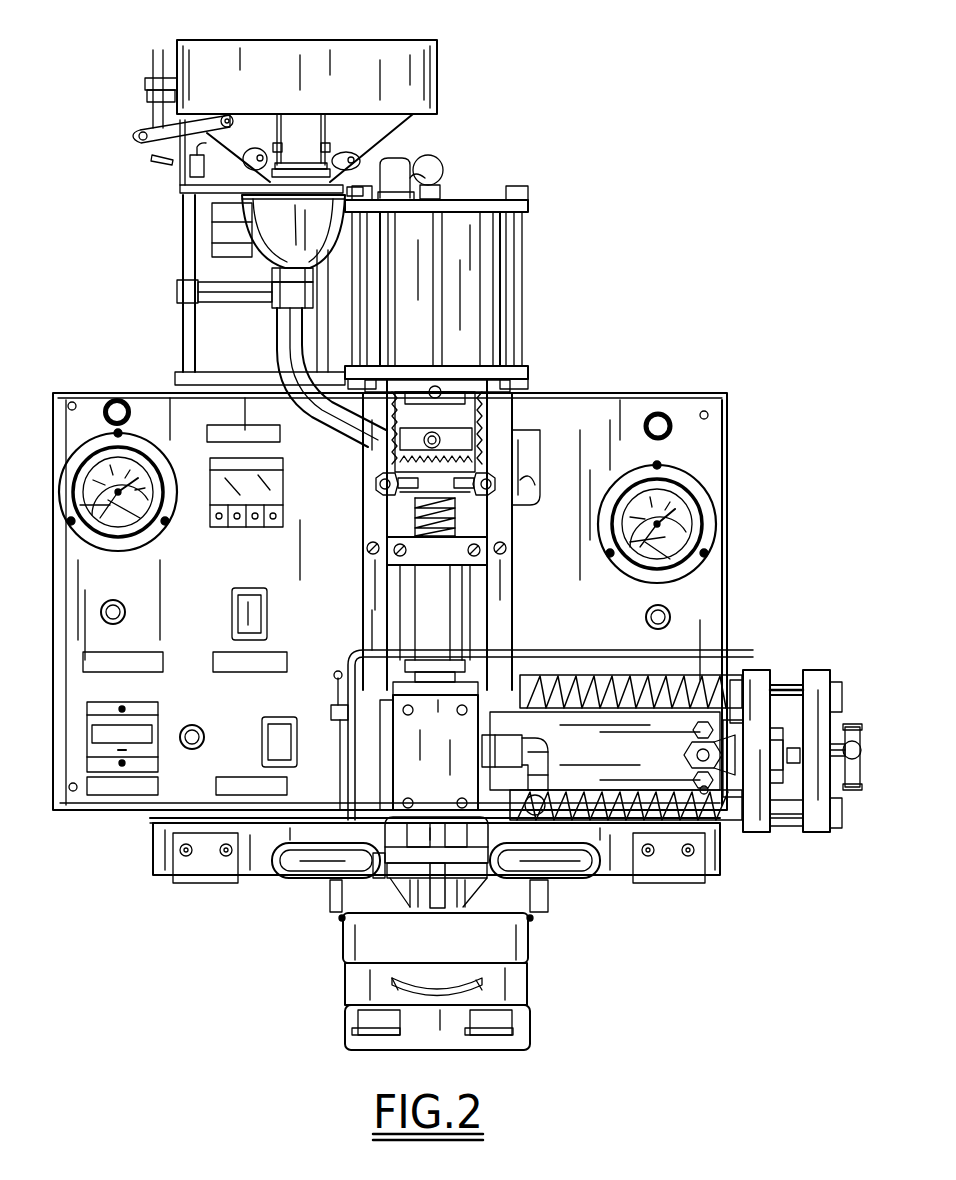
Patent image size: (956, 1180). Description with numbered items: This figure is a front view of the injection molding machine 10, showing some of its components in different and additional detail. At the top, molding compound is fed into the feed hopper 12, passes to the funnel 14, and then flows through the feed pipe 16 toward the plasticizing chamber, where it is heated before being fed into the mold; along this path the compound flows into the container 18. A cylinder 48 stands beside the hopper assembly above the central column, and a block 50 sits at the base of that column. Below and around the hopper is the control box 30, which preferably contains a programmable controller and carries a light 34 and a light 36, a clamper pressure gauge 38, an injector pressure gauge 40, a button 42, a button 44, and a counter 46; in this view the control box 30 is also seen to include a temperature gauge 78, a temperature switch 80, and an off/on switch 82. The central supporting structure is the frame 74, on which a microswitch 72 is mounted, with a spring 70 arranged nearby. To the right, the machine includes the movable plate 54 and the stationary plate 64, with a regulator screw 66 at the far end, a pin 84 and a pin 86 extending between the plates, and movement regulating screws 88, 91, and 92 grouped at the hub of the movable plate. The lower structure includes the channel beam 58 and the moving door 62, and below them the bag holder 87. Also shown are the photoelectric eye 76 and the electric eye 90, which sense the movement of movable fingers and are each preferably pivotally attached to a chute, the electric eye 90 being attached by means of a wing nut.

The injection molding machine 10 is at (614, 102).
The feed hopper 12 is at (436, 92).
The funnel 14 is at (280, 248).
The feed pipe 16 is at (290, 342).
The container 18 is at (487, 470).
The control box 30 is at (634, 393).
The light 34 is at (671, 432).
The light 36 is at (117, 398).
The clamper pressure gauge 38 is at (690, 502).
The injector pressure gauge 40 is at (140, 520).
The button 42 is at (648, 612).
The button 44 is at (126, 612).
The counter 46 is at (152, 729).
The pneumatic cylinder 48 is at (502, 288).
The pump block 50 is at (451, 778).
The movable plate 54 is at (593, 781).
The channel beam 58 is at (439, 942).
The moving door 62 is at (437, 910).
The stationary plate 64 is at (825, 672).
The regulator screw 66 is at (853, 725).
The spring 70 is at (700, 690).
The microswitch 72 is at (542, 440).
The frame 74 is at (372, 512).
The photoelectric eye 76 is at (522, 897).
The temperature gauge 78 is at (262, 476).
The temperature switch 80 is at (258, 612).
The off/on switch 82 is at (268, 742).
The pin 84 is at (787, 683).
The pin 86 is at (779, 832).
The bag holder 87 is at (515, 1033).
The movement regulating screw 88 is at (693, 729).
The electric eye 90 is at (326, 890).
The movement regulating screw 91 is at (684, 755).
The movement regulating screw 92 is at (693, 780).